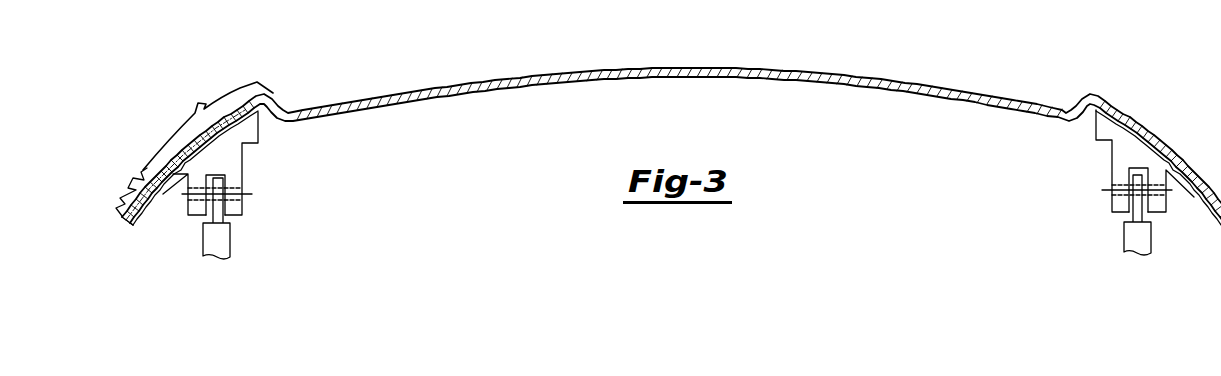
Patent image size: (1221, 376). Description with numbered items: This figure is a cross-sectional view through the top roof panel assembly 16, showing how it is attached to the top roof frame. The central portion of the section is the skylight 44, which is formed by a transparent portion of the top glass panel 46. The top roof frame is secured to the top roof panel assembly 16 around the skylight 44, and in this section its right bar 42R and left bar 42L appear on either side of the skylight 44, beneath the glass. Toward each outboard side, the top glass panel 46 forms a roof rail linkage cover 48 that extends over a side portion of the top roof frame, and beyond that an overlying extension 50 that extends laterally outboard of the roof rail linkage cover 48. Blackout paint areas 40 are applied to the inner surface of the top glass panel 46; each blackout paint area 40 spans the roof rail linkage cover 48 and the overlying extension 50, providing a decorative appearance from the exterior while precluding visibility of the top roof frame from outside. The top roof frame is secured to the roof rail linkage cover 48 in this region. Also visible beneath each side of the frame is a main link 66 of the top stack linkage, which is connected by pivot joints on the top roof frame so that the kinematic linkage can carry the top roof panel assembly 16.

The top roof panel assembly 16 is at (818, 73).
The blackout paint area 40 is at (148, 208).
The left bar 42L is at (238, 160).
The right bar 42R is at (1112, 155).
The skylight 44 is at (737, 69).
The top glass panel 46 is at (283, 103).
The roof rail linkage cover portion 48 is at (208, 125).
The overlying extension 50 is at (124, 184).
The main link 66 is at (224, 248).